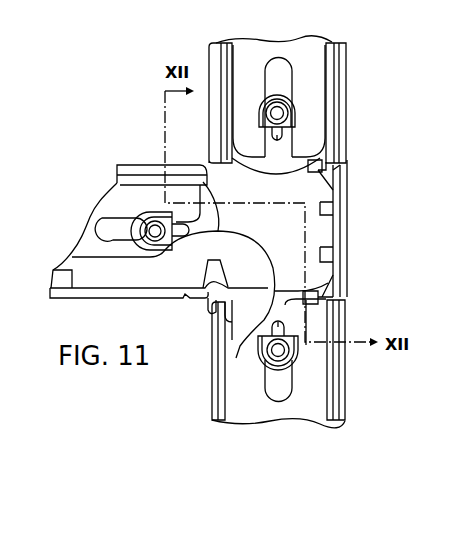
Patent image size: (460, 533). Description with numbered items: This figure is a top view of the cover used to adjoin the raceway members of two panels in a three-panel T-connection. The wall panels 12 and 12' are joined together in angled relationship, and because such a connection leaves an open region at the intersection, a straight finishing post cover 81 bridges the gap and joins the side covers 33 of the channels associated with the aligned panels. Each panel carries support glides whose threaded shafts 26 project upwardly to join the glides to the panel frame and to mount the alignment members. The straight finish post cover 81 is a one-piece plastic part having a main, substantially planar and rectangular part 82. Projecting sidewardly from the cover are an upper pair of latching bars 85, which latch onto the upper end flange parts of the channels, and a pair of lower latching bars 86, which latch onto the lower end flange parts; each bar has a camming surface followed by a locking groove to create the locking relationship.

The wall panel 12 is at (249, 217).
The wall panel 12' is at (157, 246).
The threaded shaft 26 is at (266, 101).
The side cover 33 is at (344, 70).
The straight finishing post cover 81 is at (352, 226).
The main part 82 is at (344, 194).
The upper latching bar 85 is at (340, 284).
The lower latching bar 86 is at (312, 173).